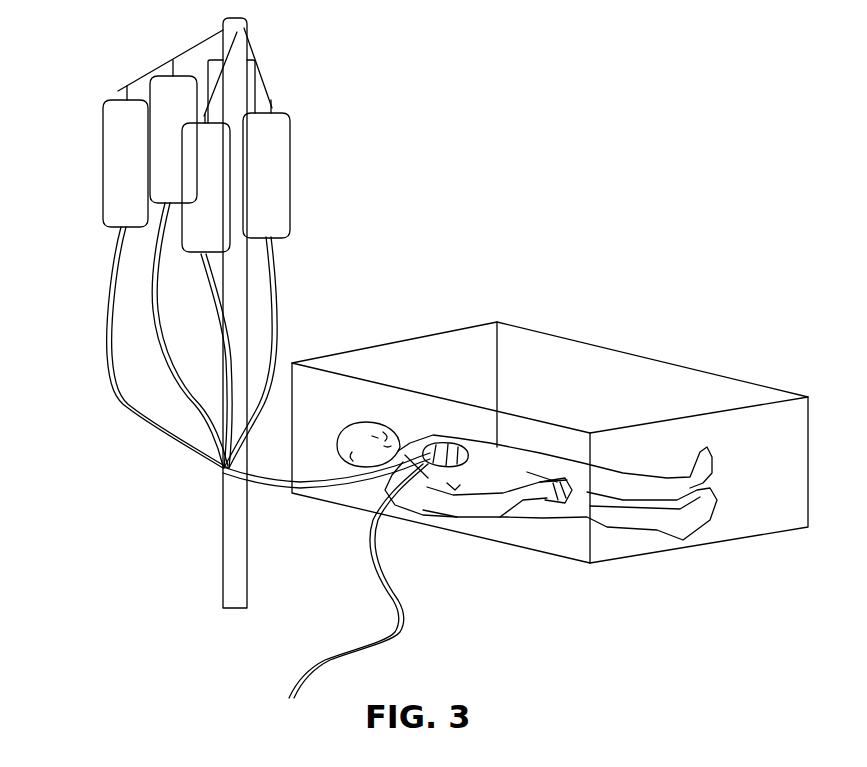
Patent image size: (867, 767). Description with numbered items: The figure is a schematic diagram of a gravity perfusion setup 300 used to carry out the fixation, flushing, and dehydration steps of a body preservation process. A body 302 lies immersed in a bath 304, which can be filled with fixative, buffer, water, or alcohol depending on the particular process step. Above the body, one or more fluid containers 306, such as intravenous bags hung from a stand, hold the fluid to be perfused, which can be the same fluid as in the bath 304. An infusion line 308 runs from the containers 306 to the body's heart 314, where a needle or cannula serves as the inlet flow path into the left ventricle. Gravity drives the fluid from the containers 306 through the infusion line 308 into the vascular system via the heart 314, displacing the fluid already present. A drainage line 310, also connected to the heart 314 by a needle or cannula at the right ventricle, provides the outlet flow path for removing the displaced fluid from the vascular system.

The gravity perfusion setup 300 is at (500, 228).
The body 302 is at (357, 417).
The bath 304 is at (637, 355).
The fluid container 306 is at (158, 84).
The infusion line 308 is at (268, 486).
The drainage line 310 is at (408, 625).
The heart 314 is at (468, 463).